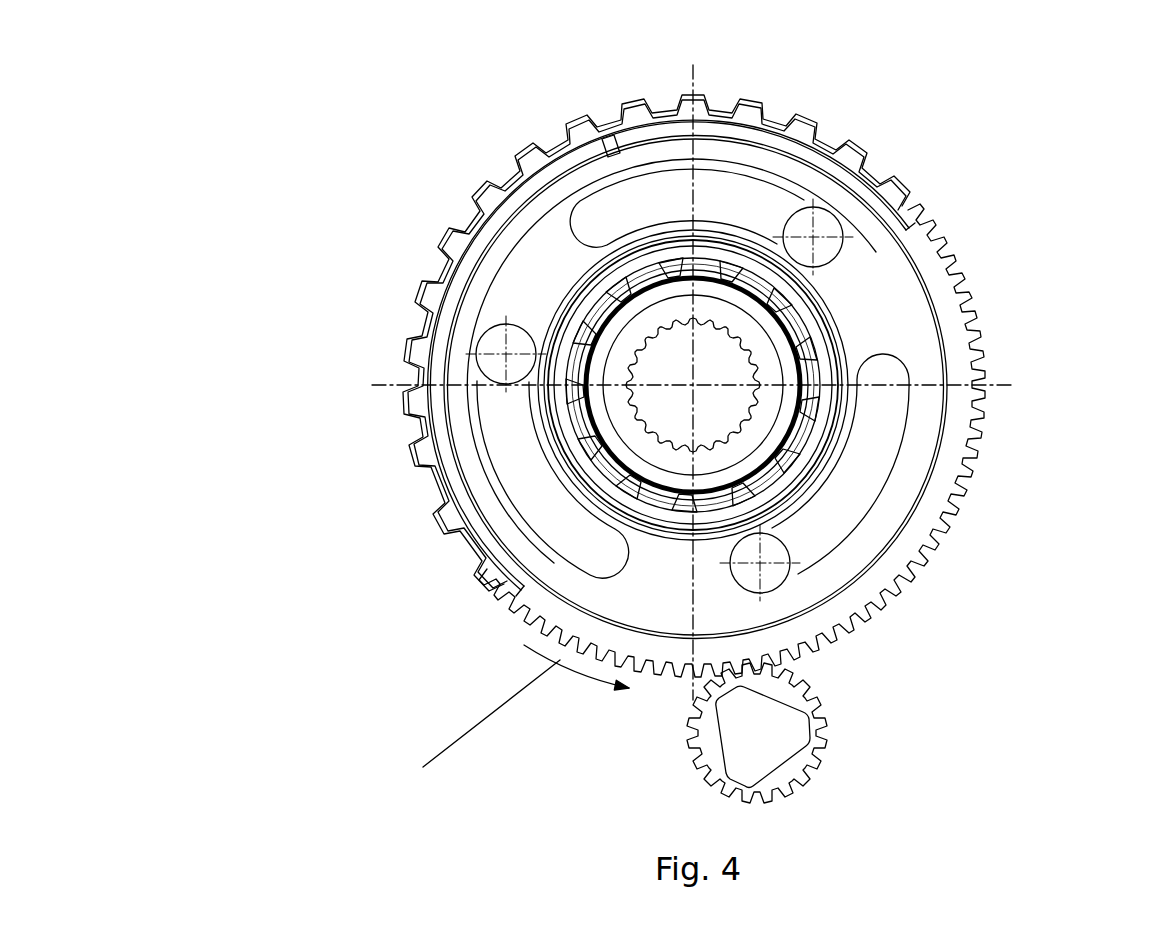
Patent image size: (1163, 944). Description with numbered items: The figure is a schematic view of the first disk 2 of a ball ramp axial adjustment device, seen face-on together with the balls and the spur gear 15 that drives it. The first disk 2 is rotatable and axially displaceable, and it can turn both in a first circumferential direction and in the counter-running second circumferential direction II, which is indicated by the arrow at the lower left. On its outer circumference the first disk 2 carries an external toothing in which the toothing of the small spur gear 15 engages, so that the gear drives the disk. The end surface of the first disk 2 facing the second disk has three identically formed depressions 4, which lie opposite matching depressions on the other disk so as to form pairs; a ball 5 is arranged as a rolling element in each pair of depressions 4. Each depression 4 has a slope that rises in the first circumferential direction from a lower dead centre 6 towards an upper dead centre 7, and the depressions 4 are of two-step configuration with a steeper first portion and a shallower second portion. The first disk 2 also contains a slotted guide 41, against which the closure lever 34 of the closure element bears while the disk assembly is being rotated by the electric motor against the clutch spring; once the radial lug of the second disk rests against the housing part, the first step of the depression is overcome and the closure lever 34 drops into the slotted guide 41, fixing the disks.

The first disk 2 is at (272, 129).
The depressions 4 is at (535, 502).
The rolling elements 5 is at (497, 349).
The lower dead centre 6 is at (893, 380).
The upper dead centre 7 is at (804, 583).
The spur gear 15 is at (793, 765).
The closure lever 34 is at (615, 155).
The slotted guide 41 is at (515, 232).
The second circumferential direction II is at (518, 719).